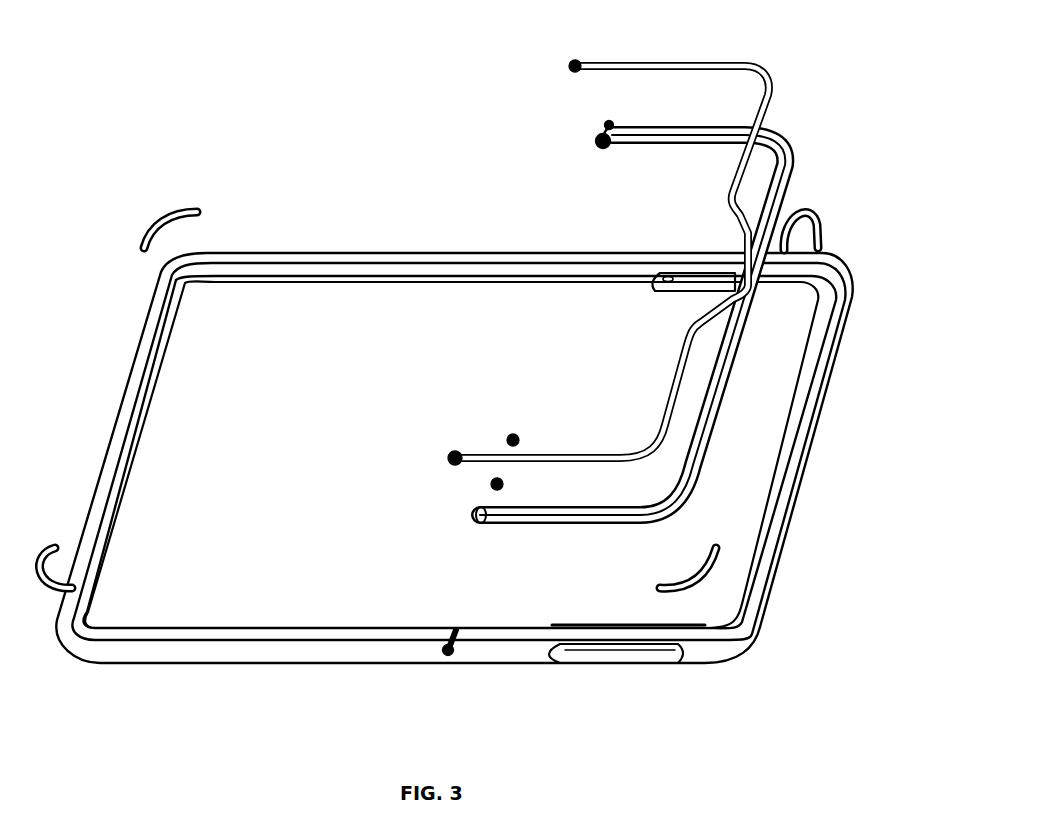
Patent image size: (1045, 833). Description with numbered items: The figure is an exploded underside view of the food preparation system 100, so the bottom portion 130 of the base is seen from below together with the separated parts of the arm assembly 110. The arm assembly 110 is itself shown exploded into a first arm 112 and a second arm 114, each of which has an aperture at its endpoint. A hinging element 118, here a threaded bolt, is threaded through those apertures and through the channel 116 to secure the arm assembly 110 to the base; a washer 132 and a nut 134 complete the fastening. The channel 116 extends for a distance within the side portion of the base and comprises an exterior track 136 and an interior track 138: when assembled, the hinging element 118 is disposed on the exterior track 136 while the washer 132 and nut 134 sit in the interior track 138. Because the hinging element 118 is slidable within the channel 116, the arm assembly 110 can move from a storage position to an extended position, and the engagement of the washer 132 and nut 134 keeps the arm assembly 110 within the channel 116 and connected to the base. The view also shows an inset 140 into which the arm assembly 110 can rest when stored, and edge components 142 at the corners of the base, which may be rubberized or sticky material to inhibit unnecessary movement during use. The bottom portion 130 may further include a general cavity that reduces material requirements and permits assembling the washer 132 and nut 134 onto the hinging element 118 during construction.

The food preparation system 100 is at (218, 95).
The arm assembly 110 is at (866, 105).
The first arm 112 is at (758, 60).
The second arm 114 is at (788, 130).
The channel 116 is at (688, 666).
The hinging element 118 is at (596, 137).
The bottom portion 130 is at (286, 310).
The washer 132 is at (486, 490).
The nut 134 is at (505, 430).
The exterior track 136 is at (590, 662).
The interior track 138 is at (680, 292).
The inset 140 is at (836, 393).
The edge components 142 is at (160, 212).